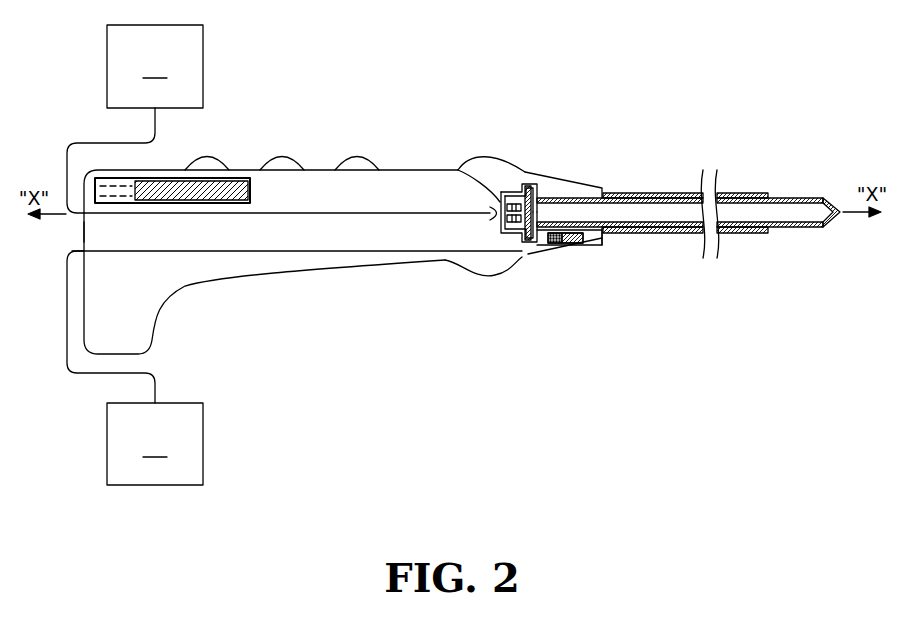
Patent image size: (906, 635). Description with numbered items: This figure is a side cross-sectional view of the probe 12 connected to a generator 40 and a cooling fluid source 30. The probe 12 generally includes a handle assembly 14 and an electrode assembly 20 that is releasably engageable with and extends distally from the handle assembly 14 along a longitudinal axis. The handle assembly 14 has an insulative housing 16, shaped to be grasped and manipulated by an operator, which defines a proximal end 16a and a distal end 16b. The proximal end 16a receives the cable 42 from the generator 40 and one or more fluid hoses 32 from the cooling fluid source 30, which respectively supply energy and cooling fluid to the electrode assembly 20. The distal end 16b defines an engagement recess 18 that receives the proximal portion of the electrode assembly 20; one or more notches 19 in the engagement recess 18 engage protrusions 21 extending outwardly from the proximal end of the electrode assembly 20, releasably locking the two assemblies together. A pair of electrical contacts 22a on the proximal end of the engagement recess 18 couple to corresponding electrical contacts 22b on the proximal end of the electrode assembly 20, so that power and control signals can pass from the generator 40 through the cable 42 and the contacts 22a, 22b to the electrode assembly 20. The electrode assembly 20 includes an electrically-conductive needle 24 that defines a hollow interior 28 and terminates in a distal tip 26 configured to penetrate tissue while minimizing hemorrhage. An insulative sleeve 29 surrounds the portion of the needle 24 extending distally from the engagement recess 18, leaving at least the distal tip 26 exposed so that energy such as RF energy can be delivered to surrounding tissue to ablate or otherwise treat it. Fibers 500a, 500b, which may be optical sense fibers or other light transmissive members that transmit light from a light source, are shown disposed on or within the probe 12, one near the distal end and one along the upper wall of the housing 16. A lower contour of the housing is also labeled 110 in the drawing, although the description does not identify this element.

The probe 12 is at (298, 216).
The handle assembly 14 is at (251, 292).
The housing 16 is at (314, 182).
The proximal end of housing 16a is at (84, 232).
The distal end of housing 16b is at (605, 240).
The engagement recess 18 is at (575, 194).
The notch 19 is at (529, 184).
The electrode assembly 20 is at (700, 190).
The protrusion 21 is at (530, 243).
The electrical contacts 22a is at (500, 207).
The electrical contacts 22b is at (516, 236).
The needle 24 is at (700, 215).
The distal tip 26 is at (842, 210).
The hollow interior 28 is at (700, 179).
The insulative sleeve 29 is at (679, 234).
The cooling fluid source 30 is at (155, 444).
The fluid hose 32 is at (100, 373).
The generator 40 is at (155, 66).
The cable 42 is at (103, 142).
The lower housing surface 110 is at (346, 290).
The fiber 500a is at (570, 256).
The fiber 500b is at (237, 162).